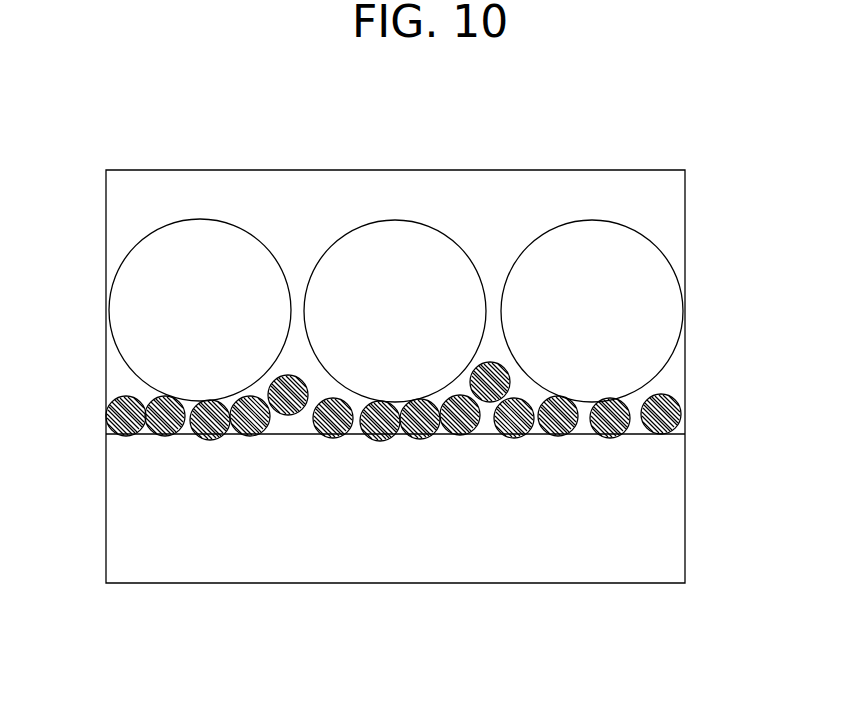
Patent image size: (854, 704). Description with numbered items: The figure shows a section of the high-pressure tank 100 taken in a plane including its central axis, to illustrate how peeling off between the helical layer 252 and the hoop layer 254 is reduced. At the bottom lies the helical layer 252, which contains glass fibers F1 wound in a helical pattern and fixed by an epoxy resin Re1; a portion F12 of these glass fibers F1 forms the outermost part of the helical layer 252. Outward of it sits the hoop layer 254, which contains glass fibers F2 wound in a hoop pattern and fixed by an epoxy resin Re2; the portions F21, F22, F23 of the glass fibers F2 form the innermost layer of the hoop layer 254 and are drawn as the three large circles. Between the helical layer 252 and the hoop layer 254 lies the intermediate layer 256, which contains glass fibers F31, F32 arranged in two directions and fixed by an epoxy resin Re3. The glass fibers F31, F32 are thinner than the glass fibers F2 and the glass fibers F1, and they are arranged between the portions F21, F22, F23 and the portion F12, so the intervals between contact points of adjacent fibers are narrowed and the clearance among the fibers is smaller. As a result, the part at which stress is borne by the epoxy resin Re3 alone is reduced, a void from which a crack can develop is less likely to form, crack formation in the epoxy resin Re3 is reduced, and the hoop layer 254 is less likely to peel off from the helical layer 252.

The high-pressure tank 100 is at (487, 133).
The helical layer 252 is at (702, 566).
The hoop layer 254 is at (737, 247).
The intermediate layer 256 is at (696, 411).
The epoxy resin Re1 is at (680, 435).
The epoxy resin Re2 is at (663, 217).
The epoxy resin Re3 is at (145, 403).
The glass fibers F1 is at (395, 542).
The portion of the glass fibers F1 F12 is at (200, 567).
The glass fibers F2 is at (396, 261).
The portion of the glass fibers F2 F21 is at (199, 219).
The portion of the glass fibers F2 F22 is at (395, 220).
The portion of the glass fibers F2 F23 is at (591, 220).
The glass fibers F31 is at (658, 436).
The glass fibers F32 is at (612, 440).